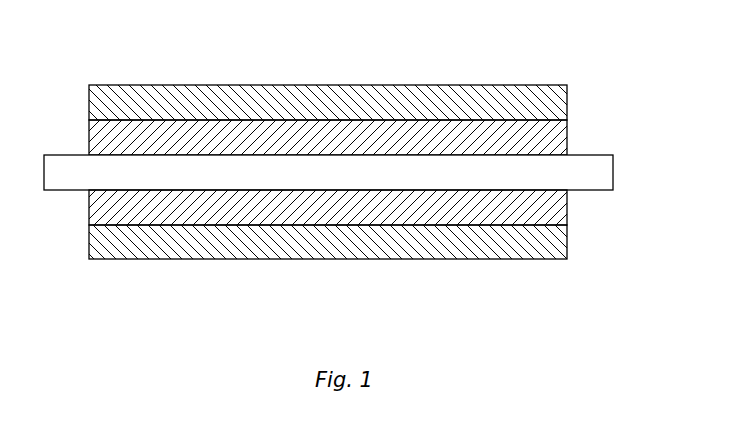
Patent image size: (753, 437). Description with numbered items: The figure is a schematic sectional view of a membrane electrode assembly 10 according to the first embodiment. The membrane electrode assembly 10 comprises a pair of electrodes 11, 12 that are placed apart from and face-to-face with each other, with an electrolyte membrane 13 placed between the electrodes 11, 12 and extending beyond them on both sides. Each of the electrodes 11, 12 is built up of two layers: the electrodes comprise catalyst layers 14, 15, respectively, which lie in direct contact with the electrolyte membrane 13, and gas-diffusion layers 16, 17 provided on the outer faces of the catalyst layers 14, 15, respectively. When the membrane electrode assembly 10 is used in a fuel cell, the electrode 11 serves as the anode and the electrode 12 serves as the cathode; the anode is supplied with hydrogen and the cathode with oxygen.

The membrane electrode assembly 10 is at (334, 66).
The electrode 11 is at (636, 70).
The electrode 12 is at (638, 212).
The electrolyte membrane 13 is at (600, 176).
The catalyst layer 14 is at (563, 136).
The catalyst layer 15 is at (568, 207).
The gas-diffusion layer 16 is at (551, 112).
The gas-diffusion layer 17 is at (568, 238).